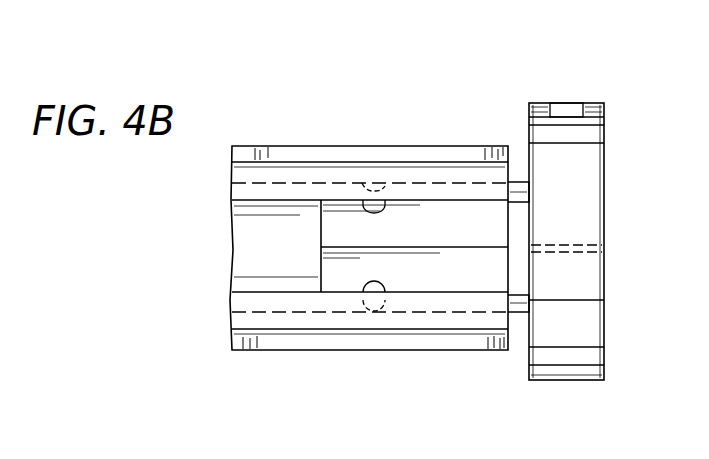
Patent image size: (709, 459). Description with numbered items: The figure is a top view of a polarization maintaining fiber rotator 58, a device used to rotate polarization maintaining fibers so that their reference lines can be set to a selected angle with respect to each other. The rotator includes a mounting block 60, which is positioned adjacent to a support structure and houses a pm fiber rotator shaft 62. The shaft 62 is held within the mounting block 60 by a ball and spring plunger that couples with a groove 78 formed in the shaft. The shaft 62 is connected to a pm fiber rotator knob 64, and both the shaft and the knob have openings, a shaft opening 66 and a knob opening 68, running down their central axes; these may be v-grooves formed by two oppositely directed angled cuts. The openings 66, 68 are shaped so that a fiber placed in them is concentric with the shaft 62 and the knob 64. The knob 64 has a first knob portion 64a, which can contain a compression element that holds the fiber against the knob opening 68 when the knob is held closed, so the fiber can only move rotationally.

The pm fiber rotator 58 is at (640, 97).
The mounting block 60 is at (278, 351).
The pm fiber rotator shaft 62 is at (477, 295).
The pm fiber rotator knob 64 is at (607, 157).
The first knob portion 64a is at (595, 328).
The shaft opening 66 is at (437, 247).
The knob opening 68 is at (578, 252).
The groove 78 is at (376, 205).